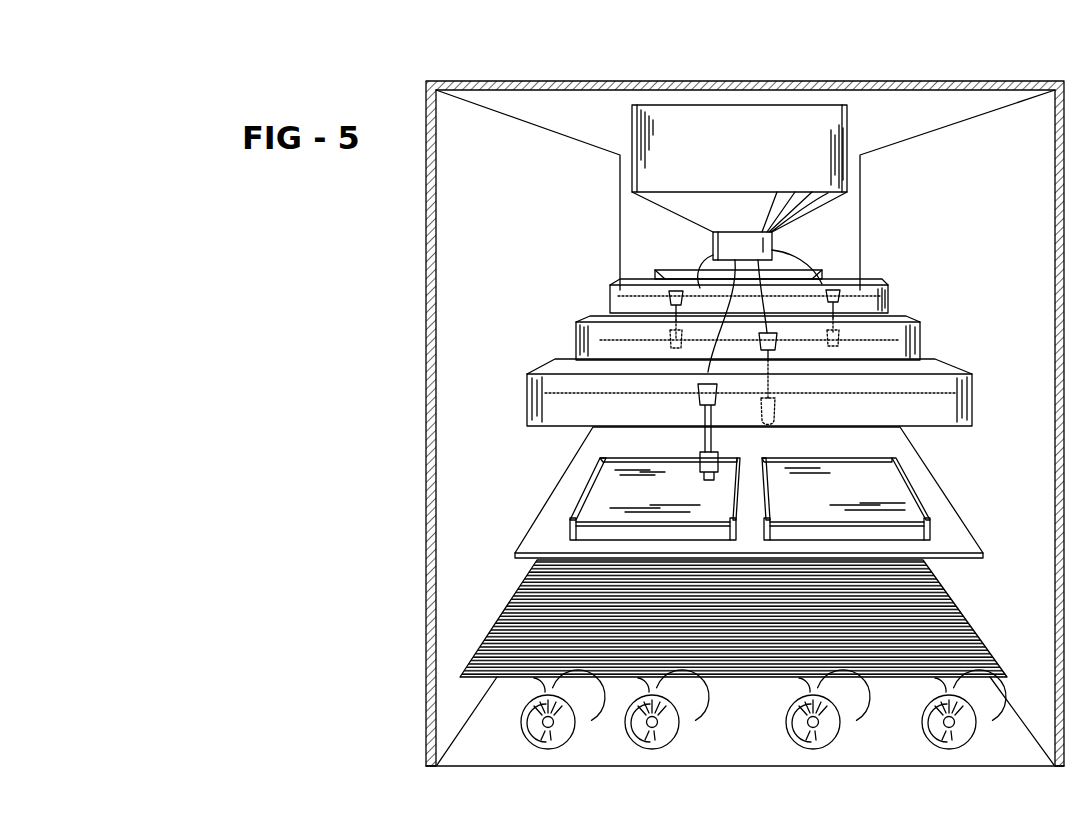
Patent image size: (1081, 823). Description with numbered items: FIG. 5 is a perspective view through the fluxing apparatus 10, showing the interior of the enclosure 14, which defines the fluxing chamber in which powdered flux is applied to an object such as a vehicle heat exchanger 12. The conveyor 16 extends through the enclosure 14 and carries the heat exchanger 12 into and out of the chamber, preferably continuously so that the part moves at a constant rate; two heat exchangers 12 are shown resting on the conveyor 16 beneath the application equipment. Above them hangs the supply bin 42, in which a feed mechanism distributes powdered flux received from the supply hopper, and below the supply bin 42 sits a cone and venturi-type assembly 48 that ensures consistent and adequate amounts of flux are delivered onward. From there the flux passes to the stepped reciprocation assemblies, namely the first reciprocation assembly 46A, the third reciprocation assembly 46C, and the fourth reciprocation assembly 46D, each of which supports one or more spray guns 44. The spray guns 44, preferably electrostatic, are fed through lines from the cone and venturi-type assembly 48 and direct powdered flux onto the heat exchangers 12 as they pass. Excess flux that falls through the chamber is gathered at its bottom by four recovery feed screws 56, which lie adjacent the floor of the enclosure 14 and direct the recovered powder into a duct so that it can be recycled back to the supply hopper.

The fluxing apparatus 10 is at (356, 394).
The heat exchanger 12 is at (585, 487).
The enclosure 14 is at (956, 80).
The conveyor 16 is at (990, 538).
The supply bin 42 is at (757, 165).
The spray guns 44 is at (666, 296).
The first reciprocation assembly 46A is at (888, 298).
The third reciprocation assembly 46C is at (920, 337).
The fourth reciprocation assembly 46D is at (972, 395).
The cone and venturi-type assembly 48 is at (753, 257).
The recovery feed screw 56 is at (557, 743).